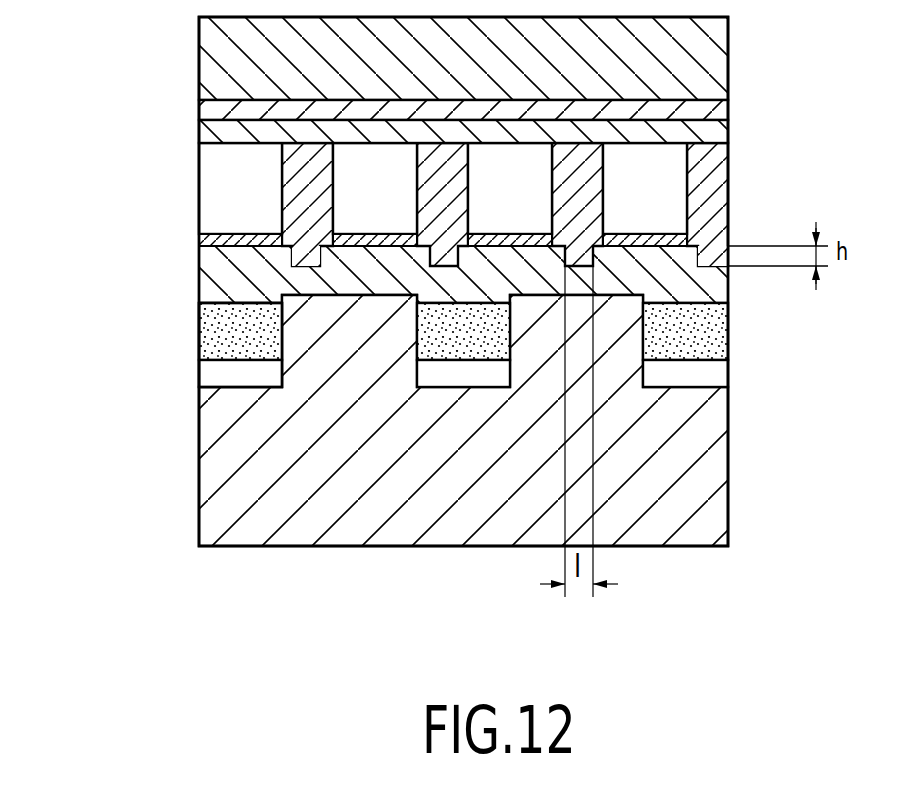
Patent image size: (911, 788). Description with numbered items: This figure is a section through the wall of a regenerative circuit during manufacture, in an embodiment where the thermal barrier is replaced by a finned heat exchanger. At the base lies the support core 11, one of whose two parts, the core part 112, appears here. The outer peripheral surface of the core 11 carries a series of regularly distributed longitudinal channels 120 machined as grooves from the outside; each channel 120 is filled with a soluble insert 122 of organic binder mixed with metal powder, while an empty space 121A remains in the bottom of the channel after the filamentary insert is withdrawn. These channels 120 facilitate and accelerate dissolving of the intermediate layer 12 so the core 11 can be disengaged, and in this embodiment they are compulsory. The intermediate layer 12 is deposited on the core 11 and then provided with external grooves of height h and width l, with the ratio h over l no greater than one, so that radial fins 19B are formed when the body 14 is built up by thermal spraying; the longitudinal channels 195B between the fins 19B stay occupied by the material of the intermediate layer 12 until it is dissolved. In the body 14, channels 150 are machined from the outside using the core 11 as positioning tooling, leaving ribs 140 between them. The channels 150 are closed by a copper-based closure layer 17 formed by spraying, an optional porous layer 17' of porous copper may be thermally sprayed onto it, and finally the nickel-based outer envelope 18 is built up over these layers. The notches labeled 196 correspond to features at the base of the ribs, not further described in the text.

The outer envelope 18 is at (218, 43).
The porous layer 17' is at (509, 89).
The closure layer 17 is at (412, 108).
The body 14 is at (713, 178).
The ribs 140 is at (307, 187).
The protrusion 196 is at (285, 258).
The radial fins 19B is at (563, 260).
The channels 150 is at (603, 207).
The intermediate layer 12 is at (233, 280).
The longitudinal channels 120 is at (197, 313).
The soluble inserts 122 is at (197, 332).
The empty space 121A is at (197, 377).
The core 11 is at (197, 537).
The core part 112 is at (703, 468).
The longitudinal channels 195B is at (660, 302).